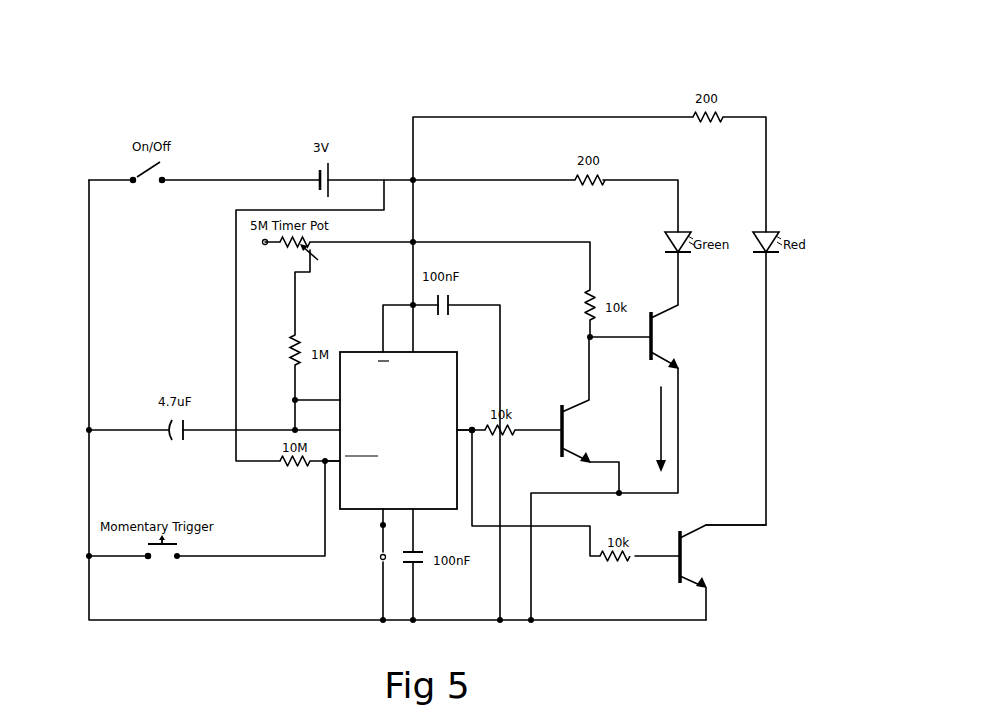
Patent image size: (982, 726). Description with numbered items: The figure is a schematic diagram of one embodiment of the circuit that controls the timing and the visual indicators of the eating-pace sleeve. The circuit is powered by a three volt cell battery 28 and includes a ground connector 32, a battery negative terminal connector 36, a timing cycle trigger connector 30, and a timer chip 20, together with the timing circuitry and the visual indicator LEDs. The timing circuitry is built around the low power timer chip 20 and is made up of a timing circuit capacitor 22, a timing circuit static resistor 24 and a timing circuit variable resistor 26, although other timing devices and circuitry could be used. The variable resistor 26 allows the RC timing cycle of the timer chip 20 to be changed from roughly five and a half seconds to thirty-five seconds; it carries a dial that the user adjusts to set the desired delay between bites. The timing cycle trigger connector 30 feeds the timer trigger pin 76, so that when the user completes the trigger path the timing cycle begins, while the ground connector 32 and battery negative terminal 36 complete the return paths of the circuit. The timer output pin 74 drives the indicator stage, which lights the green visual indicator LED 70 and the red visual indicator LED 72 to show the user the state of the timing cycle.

The 555 timer chip 20 is at (386, 392).
The timing circuit capacitor 22 is at (160, 422).
The timing circuit static resistor 24 is at (278, 350).
The timing circuit variable resistor 26 is at (295, 211).
The circuit battery 28 is at (323, 127).
The timing cycle trigger connector 30 is at (177, 565).
The circuit board ground connector 32 is at (131, 174).
The battery negative terminal 36 is at (173, 167).
The green visual indicator LED 70 is at (697, 225).
The red visual indicator LED 72 is at (780, 226).
The 555 timer output pin 74 is at (466, 420).
The 555 timer trigger pin 76 is at (358, 478).